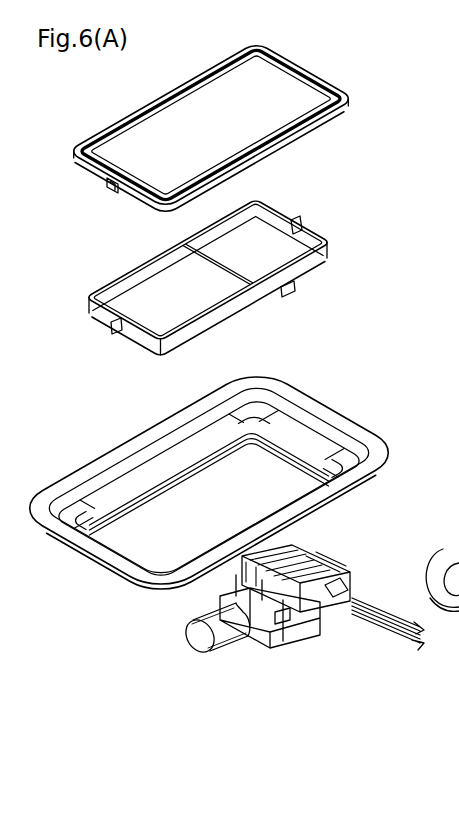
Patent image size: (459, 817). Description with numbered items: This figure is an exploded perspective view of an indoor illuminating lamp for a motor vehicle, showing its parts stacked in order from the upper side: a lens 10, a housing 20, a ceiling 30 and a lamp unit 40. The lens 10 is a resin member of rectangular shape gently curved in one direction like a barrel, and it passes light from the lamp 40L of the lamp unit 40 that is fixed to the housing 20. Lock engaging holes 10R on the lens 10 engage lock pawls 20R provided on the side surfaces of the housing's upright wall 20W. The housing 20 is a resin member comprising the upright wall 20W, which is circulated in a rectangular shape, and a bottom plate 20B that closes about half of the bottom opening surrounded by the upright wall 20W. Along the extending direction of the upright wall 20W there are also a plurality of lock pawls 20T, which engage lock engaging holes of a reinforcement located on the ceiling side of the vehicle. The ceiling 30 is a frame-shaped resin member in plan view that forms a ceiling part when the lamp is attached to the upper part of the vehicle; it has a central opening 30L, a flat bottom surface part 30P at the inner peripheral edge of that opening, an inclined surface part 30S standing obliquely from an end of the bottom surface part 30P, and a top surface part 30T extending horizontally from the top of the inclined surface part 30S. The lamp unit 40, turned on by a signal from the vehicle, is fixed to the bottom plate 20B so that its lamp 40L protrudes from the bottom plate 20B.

The lens 10 is at (323, 137).
The lock engaging holes 10R is at (112, 193).
The housing 20 is at (340, 252).
The bottom plate 20B is at (256, 248).
The lock pawls 20R is at (300, 228).
The lock pawls 20T is at (294, 296).
The upright wall 20W is at (213, 323).
The ceiling 30 is at (355, 412).
The top surface part 30T is at (162, 423).
The inclined surface part 30S is at (143, 471).
The bottom surface part 30P is at (120, 506).
The central opening 30L is at (182, 490).
The lamp unit 40 is at (303, 650).
The lamp 40L is at (192, 645).